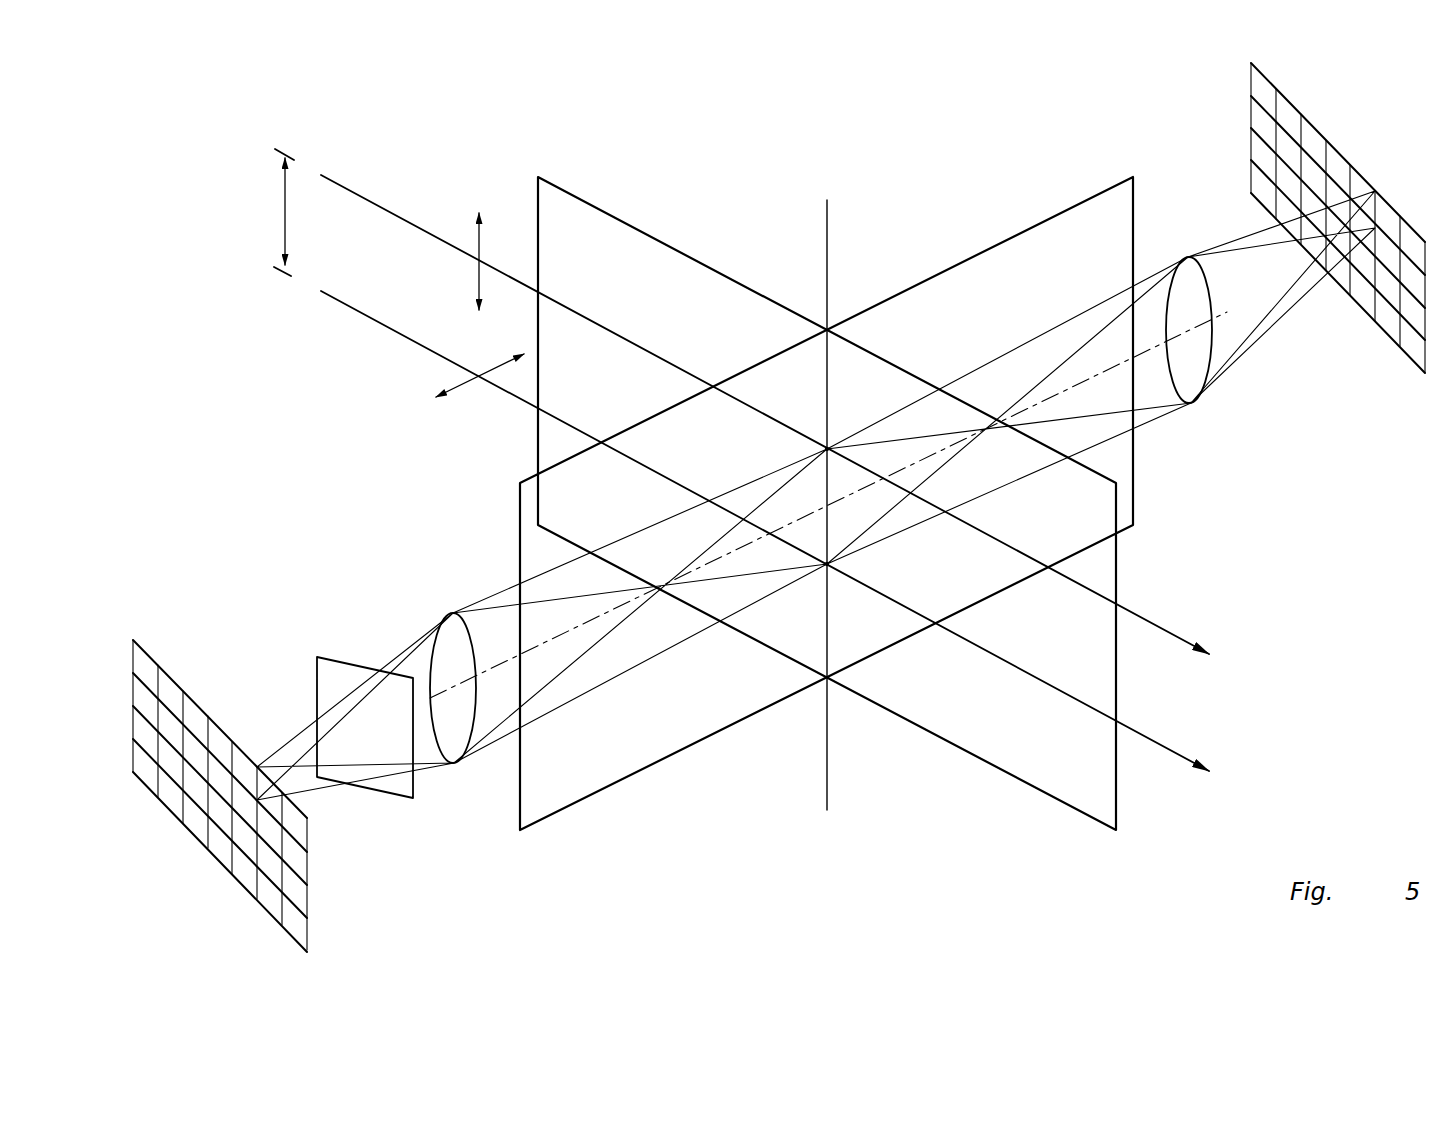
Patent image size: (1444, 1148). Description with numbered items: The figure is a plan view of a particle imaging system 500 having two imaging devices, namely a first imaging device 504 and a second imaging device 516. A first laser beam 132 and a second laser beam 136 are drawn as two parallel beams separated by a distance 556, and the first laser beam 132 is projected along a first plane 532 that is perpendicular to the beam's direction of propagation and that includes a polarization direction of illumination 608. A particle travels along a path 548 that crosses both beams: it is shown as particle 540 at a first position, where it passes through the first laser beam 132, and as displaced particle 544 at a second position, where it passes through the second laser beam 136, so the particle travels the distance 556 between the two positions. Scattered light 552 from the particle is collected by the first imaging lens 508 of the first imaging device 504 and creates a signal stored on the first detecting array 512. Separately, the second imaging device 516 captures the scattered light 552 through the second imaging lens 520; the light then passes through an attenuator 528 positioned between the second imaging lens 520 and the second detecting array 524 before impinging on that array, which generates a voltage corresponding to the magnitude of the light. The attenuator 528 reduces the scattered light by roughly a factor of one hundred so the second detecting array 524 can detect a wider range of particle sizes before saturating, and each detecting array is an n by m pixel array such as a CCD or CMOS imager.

The particle imaging system 500 is at (238, 76).
The first imaging device 504 is at (1197, 73).
The second imaging device 516 is at (420, 880).
The first laser beam 132 is at (359, 196).
The second laser beam 136 is at (359, 313).
The distance 556 is at (283, 213).
The polarization direction of illumination 608 is at (477, 276).
The first plane 532 is at (605, 205).
The path 548 is at (835, 258).
The particle 540 is at (825, 449).
The displaced particle 544 is at (840, 564).
The scattered light 552 is at (1035, 318).
The second detecting array 524 is at (185, 838).
The attenuator 528 is at (338, 668).
The second imaging lens 520 is at (452, 621).
The first imaging lens 508 is at (1188, 258).
The first detecting array 512 is at (1340, 150).